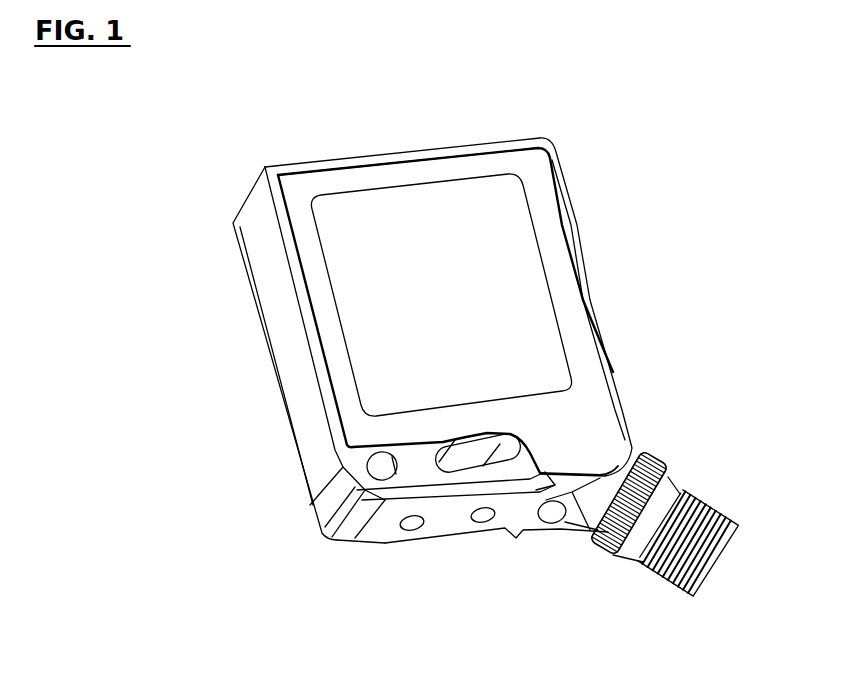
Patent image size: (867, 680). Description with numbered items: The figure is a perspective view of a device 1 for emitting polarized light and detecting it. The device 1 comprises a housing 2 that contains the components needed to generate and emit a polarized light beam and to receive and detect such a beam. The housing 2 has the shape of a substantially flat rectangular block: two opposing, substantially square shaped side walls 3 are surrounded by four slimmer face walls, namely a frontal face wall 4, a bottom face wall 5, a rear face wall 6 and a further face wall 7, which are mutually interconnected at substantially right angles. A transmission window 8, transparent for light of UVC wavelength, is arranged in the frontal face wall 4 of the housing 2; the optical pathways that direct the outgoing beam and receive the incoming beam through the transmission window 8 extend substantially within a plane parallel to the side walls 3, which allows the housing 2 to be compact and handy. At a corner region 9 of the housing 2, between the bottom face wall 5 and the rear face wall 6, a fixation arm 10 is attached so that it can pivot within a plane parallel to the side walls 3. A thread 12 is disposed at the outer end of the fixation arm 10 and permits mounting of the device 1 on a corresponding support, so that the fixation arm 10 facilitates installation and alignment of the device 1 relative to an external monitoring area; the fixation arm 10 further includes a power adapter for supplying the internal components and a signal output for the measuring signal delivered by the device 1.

The device 1 is at (168, 294).
The housing 2 is at (540, 195).
The side walls 3 is at (470, 328).
The frontal face wall 4 is at (313, 503).
The bottom face wall 5 is at (447, 523).
The rear face wall 6 is at (622, 398).
The face wall 7 is at (357, 153).
The transmission window 8 is at (297, 380).
The corner region 9 is at (592, 458).
The fixation arm 10 is at (640, 543).
The thread 12 is at (658, 578).